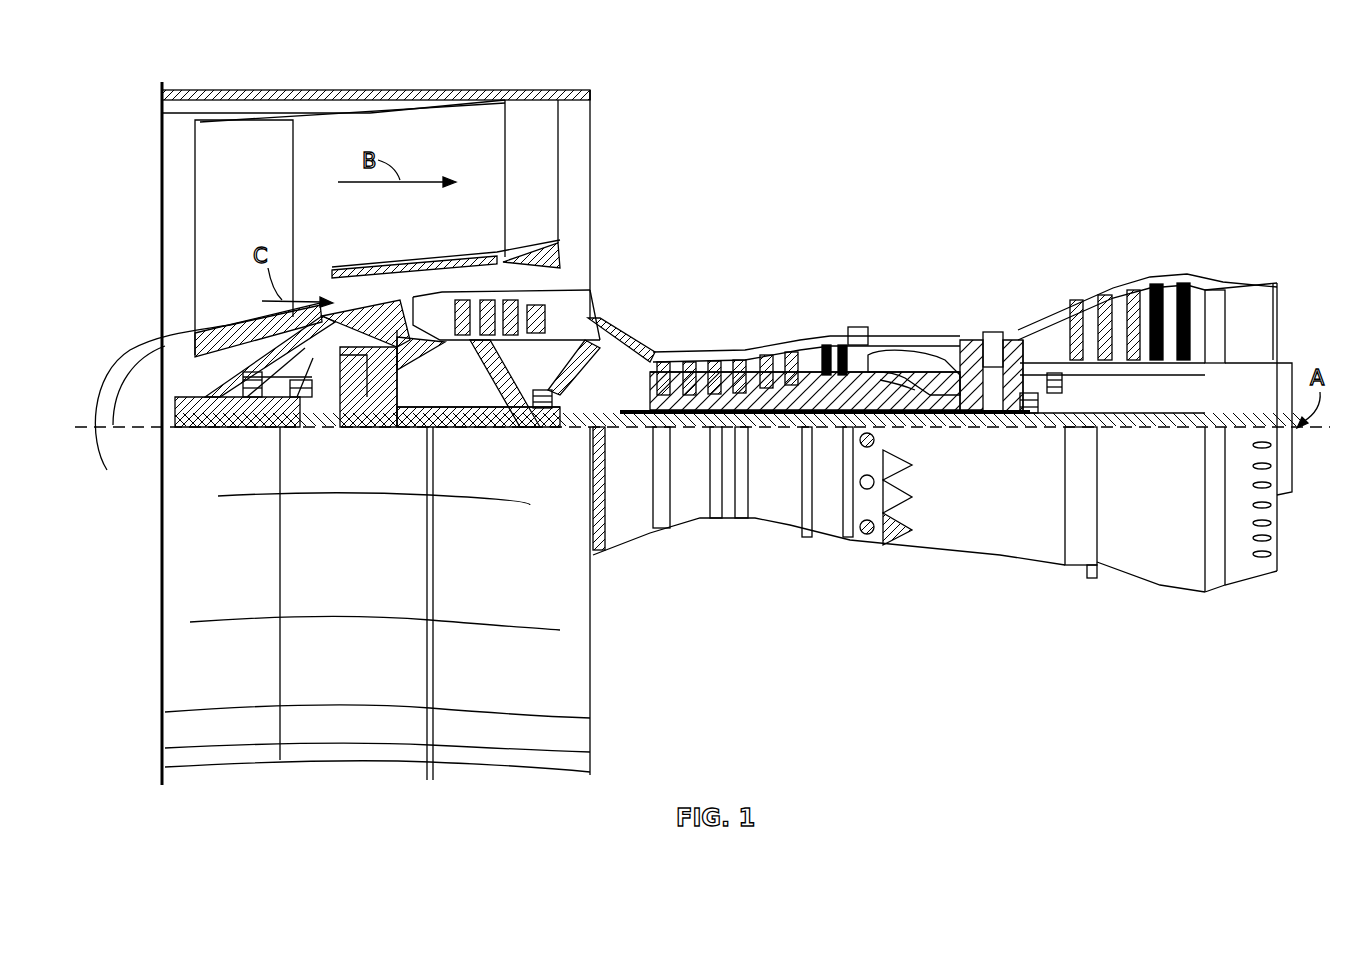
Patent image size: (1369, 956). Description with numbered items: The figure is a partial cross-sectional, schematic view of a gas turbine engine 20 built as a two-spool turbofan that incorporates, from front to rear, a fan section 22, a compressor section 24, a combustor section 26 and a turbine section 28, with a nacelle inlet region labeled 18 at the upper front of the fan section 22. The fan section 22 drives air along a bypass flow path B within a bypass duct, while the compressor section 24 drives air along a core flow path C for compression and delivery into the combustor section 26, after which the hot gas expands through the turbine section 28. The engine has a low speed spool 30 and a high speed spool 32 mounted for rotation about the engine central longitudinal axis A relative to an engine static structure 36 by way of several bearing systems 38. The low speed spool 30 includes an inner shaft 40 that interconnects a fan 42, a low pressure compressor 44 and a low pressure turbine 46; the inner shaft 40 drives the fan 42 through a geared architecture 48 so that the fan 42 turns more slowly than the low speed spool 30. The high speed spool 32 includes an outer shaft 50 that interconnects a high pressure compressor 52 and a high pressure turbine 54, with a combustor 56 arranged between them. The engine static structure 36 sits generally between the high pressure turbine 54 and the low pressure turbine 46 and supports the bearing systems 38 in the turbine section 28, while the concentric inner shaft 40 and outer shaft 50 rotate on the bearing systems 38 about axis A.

The fan nacelle inlet 18 is at (588, 98).
The gas turbine engine 20 is at (1125, 120).
The fan section 22 is at (443, 66).
The compressor section 24 is at (770, 290).
The combustor section 26 is at (914, 290).
The turbine section 28 is at (1058, 268).
The low speed spool 30 is at (790, 438).
The high speed spool 32 is at (856, 345).
The engine static structure 36 is at (826, 547).
The bearing systems 38 is at (252, 400).
The inner shaft 40 is at (613, 430).
The fan 42 is at (263, 205).
The low pressure compressor 44 is at (493, 333).
The low pressure turbine 46 is at (1150, 295).
The geared architecture 48 is at (365, 405).
The outer shaft 50 is at (940, 428).
The high pressure compressor 52 is at (755, 347).
The high pressure turbine 54 is at (1003, 340).
The combustor 56 is at (925, 352).